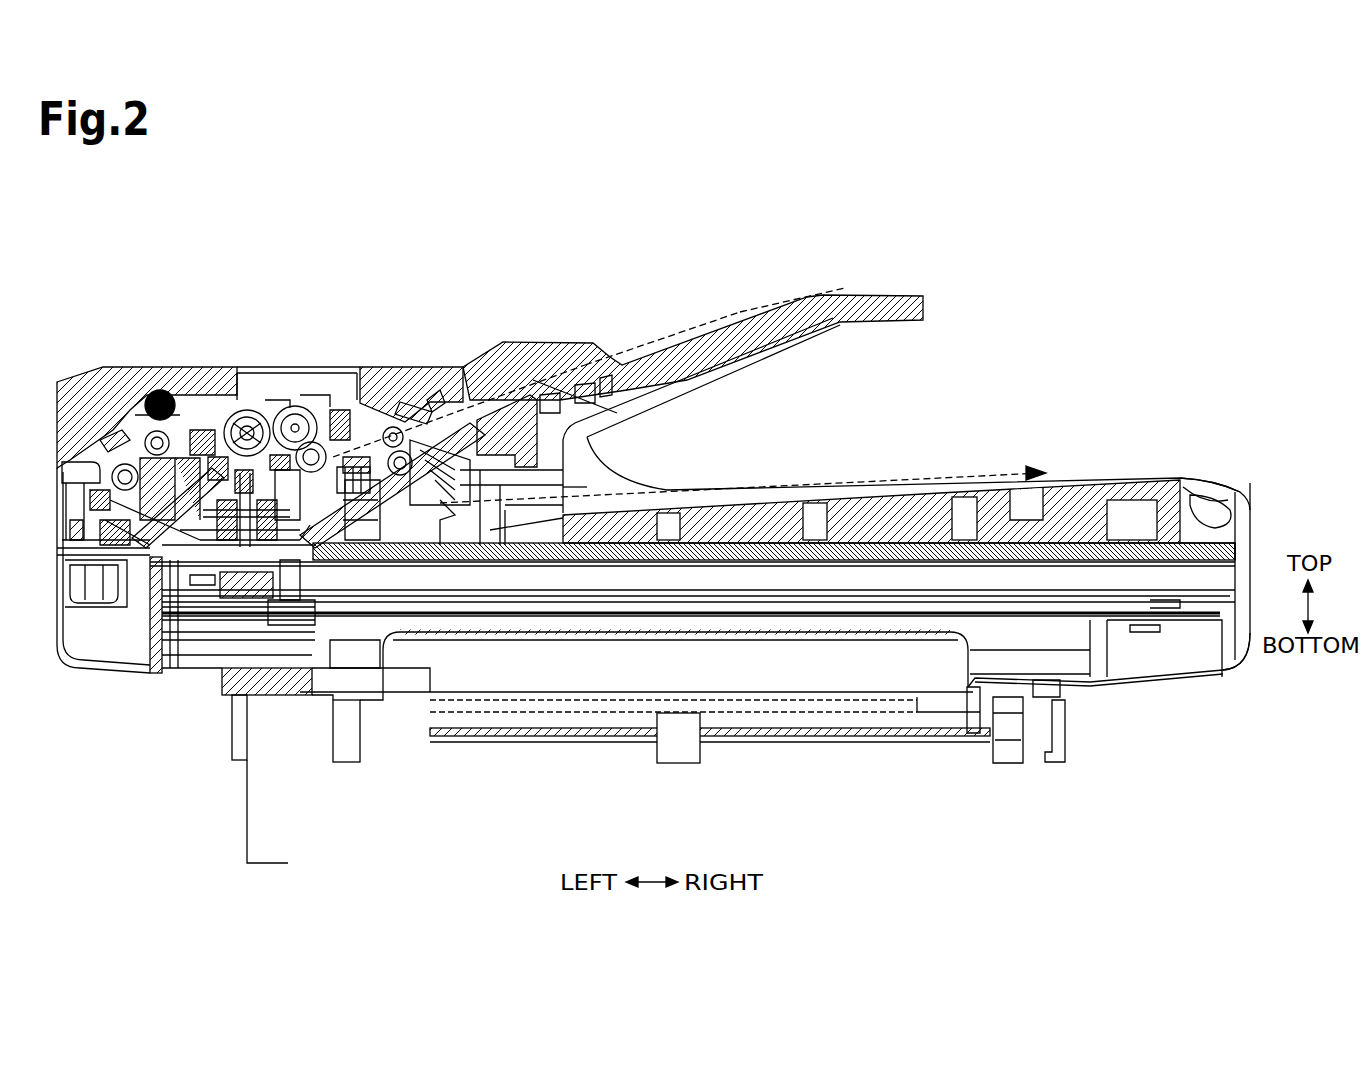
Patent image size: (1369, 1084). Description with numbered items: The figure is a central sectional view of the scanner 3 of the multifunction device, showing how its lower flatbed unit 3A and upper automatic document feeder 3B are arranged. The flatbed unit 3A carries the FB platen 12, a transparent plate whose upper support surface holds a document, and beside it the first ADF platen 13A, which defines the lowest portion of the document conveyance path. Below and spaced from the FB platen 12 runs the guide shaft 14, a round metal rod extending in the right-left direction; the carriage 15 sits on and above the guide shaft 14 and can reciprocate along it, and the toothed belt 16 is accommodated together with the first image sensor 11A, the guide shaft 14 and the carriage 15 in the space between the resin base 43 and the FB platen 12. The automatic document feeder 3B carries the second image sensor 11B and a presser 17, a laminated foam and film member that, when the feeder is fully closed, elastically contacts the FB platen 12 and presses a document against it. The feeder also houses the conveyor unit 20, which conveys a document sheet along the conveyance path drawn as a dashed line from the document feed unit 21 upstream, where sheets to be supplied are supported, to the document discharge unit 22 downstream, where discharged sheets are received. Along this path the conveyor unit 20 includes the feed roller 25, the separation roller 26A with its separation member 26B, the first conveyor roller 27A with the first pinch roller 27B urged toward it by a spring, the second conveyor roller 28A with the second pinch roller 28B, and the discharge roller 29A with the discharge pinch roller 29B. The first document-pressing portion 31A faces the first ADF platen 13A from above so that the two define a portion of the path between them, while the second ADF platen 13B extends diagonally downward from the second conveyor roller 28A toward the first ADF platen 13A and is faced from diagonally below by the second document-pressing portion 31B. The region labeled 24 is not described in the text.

The scanner 3 is at (653, 565).
The flatbed unit 3A is at (1222, 672).
The automatic document feeder 3B is at (1220, 481).
The first image sensor 11A is at (215, 668).
The second image sensor 11B is at (180, 483).
The FB platen 12 is at (527, 556).
The first ADF platen 13A is at (192, 556).
The second ADF platen 13B is at (172, 558).
The guide shaft 14 is at (743, 600).
The carriage 15 is at (300, 567).
The toothed belt 16 is at (812, 616).
The presser 17 is at (597, 560).
The conveyor unit 20 is at (258, 395).
The document feed unit 21 is at (638, 340).
The document discharge unit 22 is at (693, 484).
The conveying guide 24 is at (342, 367).
The feed roller 25 is at (322, 440).
The separation roller 26A is at (275, 438).
The separation member 26B is at (244, 410).
The first conveyor roller 27A is at (135, 445).
The first pinch roller 27B is at (158, 420).
The second conveyor roller 28A is at (112, 470).
The second pinch roller 28B is at (83, 483).
The discharge roller 29A is at (393, 450).
The discharge pinch roller 29B is at (420, 467).
The first document-pressing portion 31A is at (322, 565).
The second document-pressing portion 31B is at (103, 592).
The base 43 is at (1140, 684).